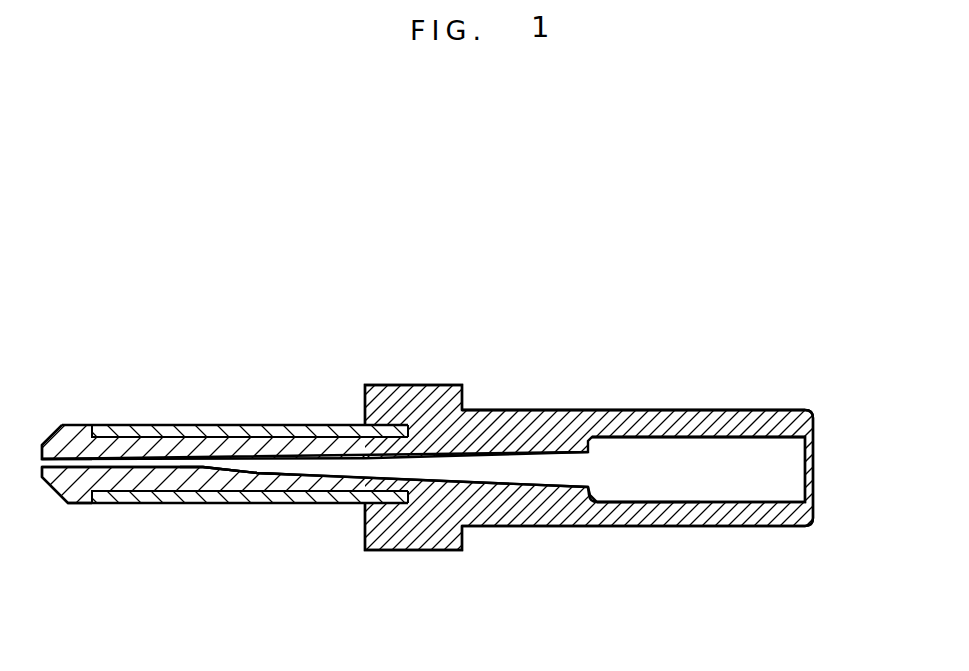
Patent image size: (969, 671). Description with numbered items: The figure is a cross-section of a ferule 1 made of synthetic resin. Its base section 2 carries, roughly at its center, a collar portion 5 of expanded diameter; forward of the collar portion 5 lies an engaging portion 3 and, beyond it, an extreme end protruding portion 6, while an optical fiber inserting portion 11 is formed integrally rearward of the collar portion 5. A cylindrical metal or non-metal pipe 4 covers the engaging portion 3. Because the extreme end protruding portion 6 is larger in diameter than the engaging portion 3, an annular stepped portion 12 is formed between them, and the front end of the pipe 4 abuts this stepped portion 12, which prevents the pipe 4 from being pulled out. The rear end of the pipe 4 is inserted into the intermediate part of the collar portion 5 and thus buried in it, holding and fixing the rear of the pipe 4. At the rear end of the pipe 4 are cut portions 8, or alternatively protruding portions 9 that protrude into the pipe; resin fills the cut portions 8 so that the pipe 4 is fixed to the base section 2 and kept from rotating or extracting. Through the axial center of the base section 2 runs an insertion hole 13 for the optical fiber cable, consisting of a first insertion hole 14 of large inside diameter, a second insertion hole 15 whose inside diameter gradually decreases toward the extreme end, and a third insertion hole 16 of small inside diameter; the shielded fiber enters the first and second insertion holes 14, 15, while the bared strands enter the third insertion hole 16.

The ferule 1 is at (492, 328).
The base section 2 is at (558, 410).
The engaging portion 3 is at (177, 437).
The pipe 4 is at (250, 440).
The collar portion 5 is at (438, 393).
The extreme end protruding portion 6 is at (80, 423).
The cut portions 8 is at (412, 425).
The protruding portions 9 is at (416, 494).
The optical fiber inserting portion 11 is at (702, 423).
The stepped portion 12 is at (92, 425).
The insertion hole 13 is at (783, 458).
The first insertion hole 14 is at (684, 494).
The second insertion hole 15 is at (511, 463).
The third insertion hole 16 is at (220, 474).